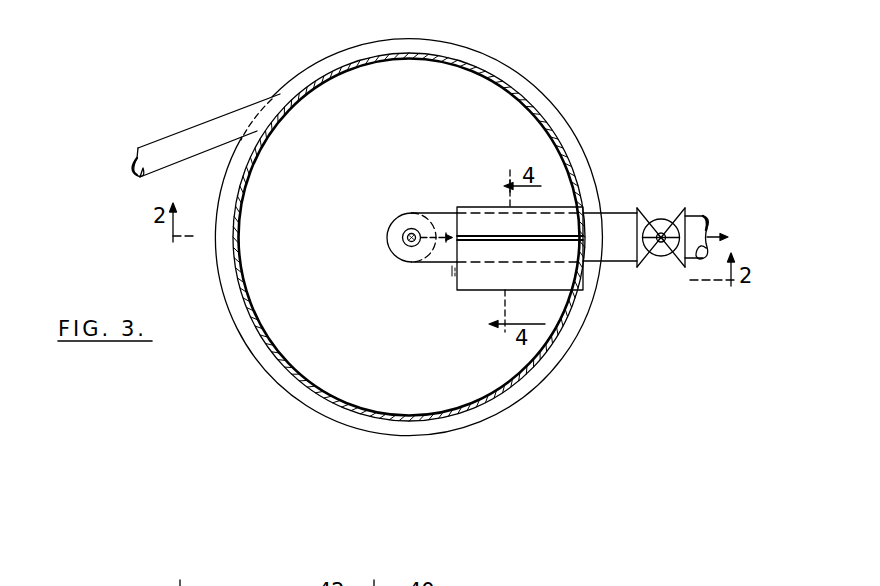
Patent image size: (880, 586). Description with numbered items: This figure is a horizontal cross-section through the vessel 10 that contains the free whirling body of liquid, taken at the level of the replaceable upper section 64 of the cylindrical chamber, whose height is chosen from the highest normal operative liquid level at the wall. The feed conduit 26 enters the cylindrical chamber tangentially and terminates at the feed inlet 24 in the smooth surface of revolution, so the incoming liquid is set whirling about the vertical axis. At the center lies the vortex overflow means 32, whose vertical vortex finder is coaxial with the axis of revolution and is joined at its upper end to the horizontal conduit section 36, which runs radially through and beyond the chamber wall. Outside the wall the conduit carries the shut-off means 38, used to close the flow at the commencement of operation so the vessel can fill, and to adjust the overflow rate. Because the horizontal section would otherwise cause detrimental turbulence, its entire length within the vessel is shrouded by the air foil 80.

The vessel 10 is at (558, 106).
The upper section 64 is at (562, 148).
The feed inlet 24 is at (285, 112).
The conduit 26 is at (212, 122).
The air foil 80 is at (488, 207).
The vortex overflow means 32 is at (433, 253).
The horizontal conduit section 36 is at (615, 262).
The shut-off means 38 is at (660, 247).